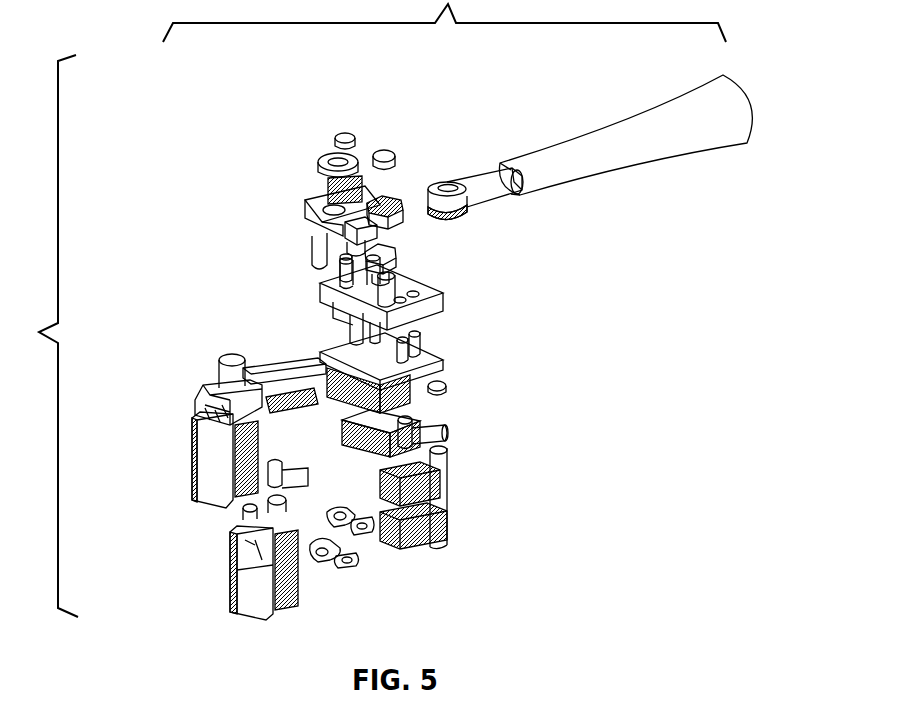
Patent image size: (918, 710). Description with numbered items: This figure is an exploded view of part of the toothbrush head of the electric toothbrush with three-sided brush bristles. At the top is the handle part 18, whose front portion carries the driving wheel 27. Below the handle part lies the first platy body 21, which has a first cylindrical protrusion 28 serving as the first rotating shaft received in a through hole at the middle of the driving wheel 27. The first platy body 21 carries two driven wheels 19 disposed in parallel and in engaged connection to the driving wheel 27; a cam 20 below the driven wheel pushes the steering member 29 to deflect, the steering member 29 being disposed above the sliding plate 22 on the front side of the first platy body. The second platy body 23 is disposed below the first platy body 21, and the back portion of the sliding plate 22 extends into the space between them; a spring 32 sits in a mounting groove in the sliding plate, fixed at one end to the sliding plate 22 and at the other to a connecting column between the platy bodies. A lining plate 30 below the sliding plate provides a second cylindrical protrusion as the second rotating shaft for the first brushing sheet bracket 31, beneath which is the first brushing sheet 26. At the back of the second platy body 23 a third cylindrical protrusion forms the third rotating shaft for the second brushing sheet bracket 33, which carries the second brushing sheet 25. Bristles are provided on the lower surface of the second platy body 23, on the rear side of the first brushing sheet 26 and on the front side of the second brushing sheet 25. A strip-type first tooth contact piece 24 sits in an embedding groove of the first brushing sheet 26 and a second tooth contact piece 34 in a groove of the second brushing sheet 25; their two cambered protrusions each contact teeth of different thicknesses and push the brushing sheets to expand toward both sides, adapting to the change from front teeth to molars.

The handle part 18 is at (647, 127).
The driving wheel 27 is at (473, 212).
The driven wheels 19 is at (322, 175).
The cam 20 is at (400, 221).
The steering member 29 is at (305, 213).
The first cylindrical protrusion 28 is at (393, 267).
The first platy body 21 is at (430, 308).
The second platy body 23 is at (445, 368).
The sliding plate 22 is at (258, 363).
The spring 32 is at (305, 385).
The lining plate 30 is at (200, 402).
The first brushing sheet bracket 31 is at (223, 475).
The first brushing sheet 26 is at (243, 568).
The first tooth contact piece 24 is at (347, 557).
The second tooth contact piece 34 is at (367, 537).
The second brushing sheet 25 is at (448, 535).
The second brushing sheet bracket 33 is at (450, 443).